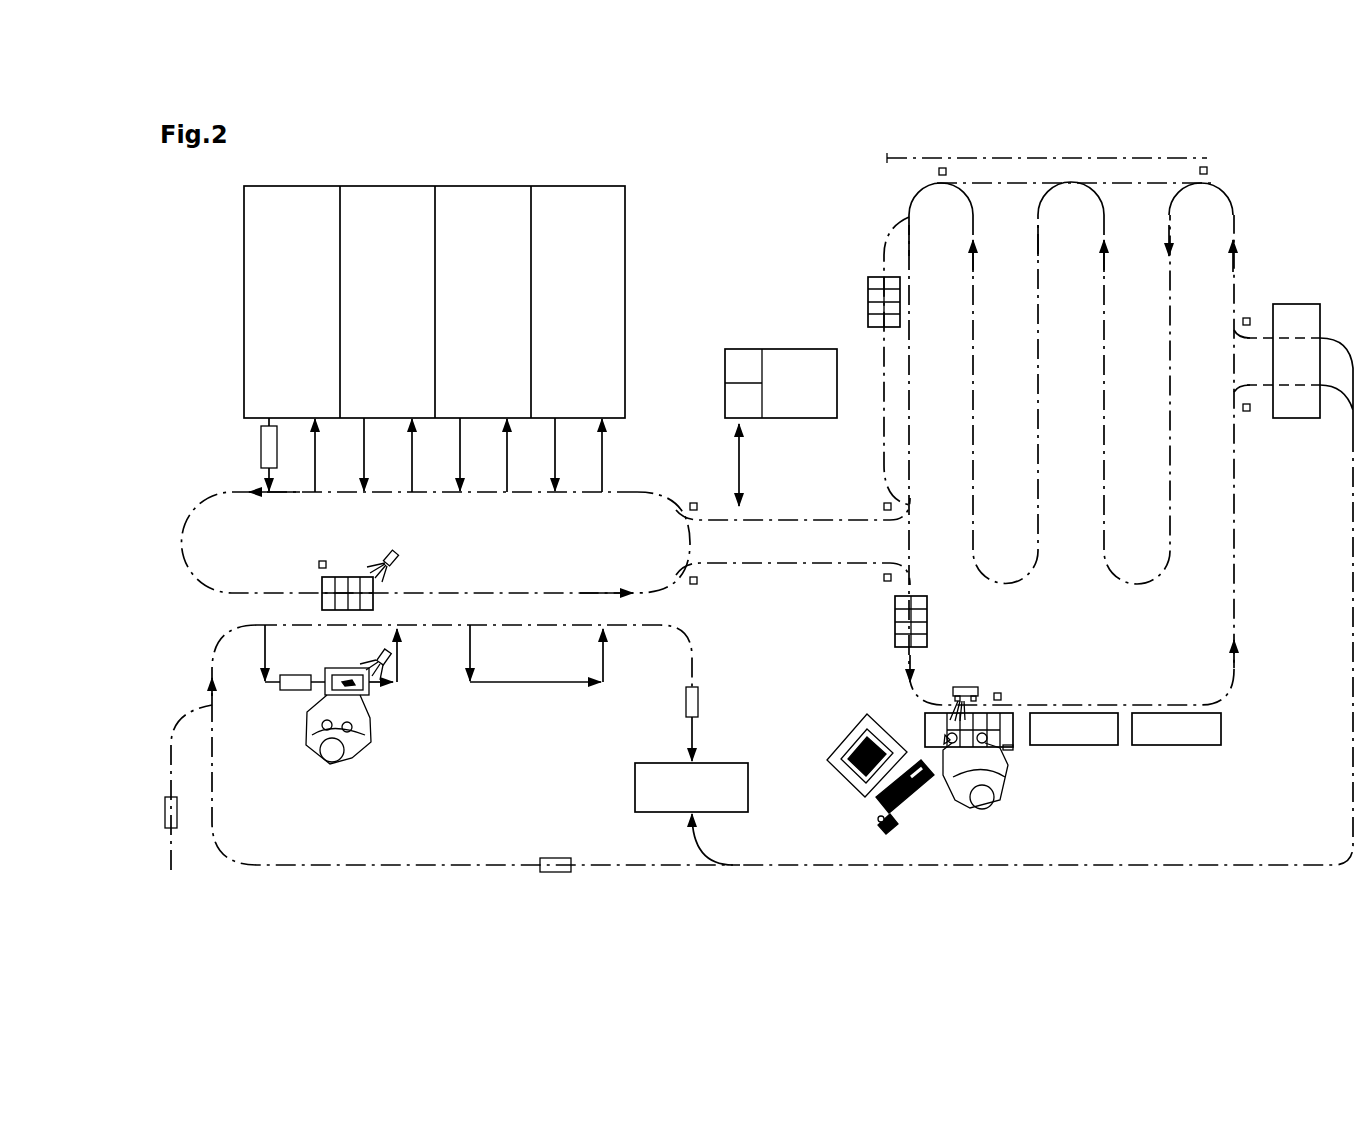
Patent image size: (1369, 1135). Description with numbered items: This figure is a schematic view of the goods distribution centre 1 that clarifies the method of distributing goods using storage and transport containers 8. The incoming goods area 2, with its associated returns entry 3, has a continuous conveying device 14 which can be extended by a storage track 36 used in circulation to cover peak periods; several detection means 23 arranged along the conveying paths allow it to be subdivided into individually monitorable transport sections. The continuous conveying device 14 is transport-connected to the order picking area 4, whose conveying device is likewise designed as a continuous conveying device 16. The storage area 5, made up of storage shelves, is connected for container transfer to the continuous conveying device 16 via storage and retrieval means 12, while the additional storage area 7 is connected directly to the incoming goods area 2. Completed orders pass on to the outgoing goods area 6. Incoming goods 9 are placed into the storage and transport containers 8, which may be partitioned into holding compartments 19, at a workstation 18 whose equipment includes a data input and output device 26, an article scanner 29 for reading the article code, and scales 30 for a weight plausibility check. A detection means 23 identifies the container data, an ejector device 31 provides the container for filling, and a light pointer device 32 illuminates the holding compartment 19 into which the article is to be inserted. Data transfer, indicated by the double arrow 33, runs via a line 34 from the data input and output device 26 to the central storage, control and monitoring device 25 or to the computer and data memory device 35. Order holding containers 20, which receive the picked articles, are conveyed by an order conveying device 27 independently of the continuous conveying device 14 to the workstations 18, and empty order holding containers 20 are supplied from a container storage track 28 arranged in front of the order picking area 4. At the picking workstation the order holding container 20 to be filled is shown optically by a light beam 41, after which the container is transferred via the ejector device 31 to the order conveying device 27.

The goods distribution centre 1 is at (471, 751).
The incoming goods area 2 is at (1096, 768).
The returns entry 3 is at (865, 267).
The order picking area 4 is at (645, 401).
The storage area 5 is at (641, 229).
The outgoing goods area 6 is at (655, 787).
The additional storage area 7 is at (1301, 289).
The storage and transport container 8 is at (340, 590).
The incoming goods 9 is at (360, 691).
The storage and retrieval means 12 is at (258, 450).
The continuous conveying device 14 is at (1237, 597).
The continuous conveying device 16 is at (628, 486).
The workstation 18 is at (290, 770).
The holding compartment 19 is at (945, 733).
The order holding container 20 is at (327, 685).
The detection means 23 is at (320, 564).
The storage, control and monitoring device 25 is at (731, 331).
The data input and output device 26 is at (359, 766).
The order conveying device 27 is at (1168, 856).
The container storage track 28 is at (173, 733).
The article scanner 29 is at (878, 825).
The scales 30 is at (1008, 723).
The ejector device 31 is at (705, 722).
The light pointer device 32 is at (398, 557).
The double arrow 33 is at (742, 465).
The line 34 is at (1030, 153).
The computer and data memory device 35 is at (808, 368).
The storage track 36 is at (1105, 279).
The light beam 41 is at (383, 573).